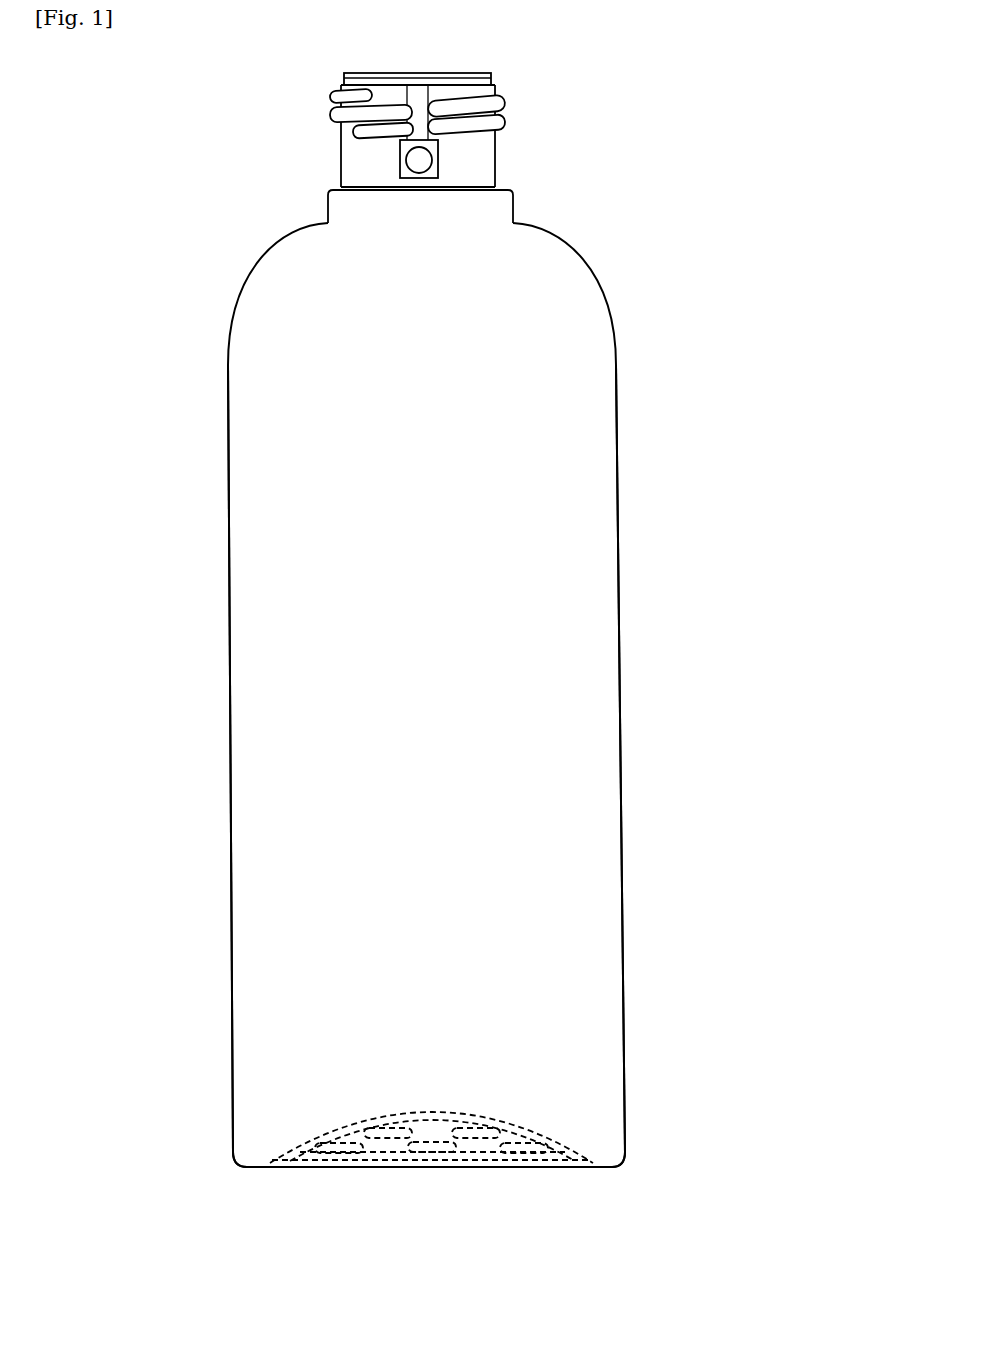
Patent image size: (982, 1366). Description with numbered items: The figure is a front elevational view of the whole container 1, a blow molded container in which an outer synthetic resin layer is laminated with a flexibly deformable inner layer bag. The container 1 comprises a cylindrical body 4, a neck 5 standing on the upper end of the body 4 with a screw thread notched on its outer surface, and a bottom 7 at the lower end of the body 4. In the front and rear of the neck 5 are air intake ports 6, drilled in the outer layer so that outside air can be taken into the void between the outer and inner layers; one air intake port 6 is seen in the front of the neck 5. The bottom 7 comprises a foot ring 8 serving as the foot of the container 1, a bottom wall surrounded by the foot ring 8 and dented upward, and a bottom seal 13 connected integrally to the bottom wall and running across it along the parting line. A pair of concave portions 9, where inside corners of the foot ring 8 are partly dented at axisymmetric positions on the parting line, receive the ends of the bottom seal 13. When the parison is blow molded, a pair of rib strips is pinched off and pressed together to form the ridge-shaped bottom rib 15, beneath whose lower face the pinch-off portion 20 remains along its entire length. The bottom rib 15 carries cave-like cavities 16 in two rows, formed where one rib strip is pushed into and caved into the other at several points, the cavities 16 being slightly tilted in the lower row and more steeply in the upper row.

The container 1 is at (622, 340).
The body 4 is at (255, 527).
The neck 5 is at (477, 162).
The air intake port 6 is at (417, 160).
The bottom 7 is at (222, 1165).
The foot ring 8 is at (417, 1168).
The concave portion 9 is at (610, 1172).
The bottom seal 13 is at (368, 1168).
The bottom rib 15 is at (282, 1172).
The cavity 16 is at (537, 1172).
The pinch-off portion 20 is at (492, 1172).